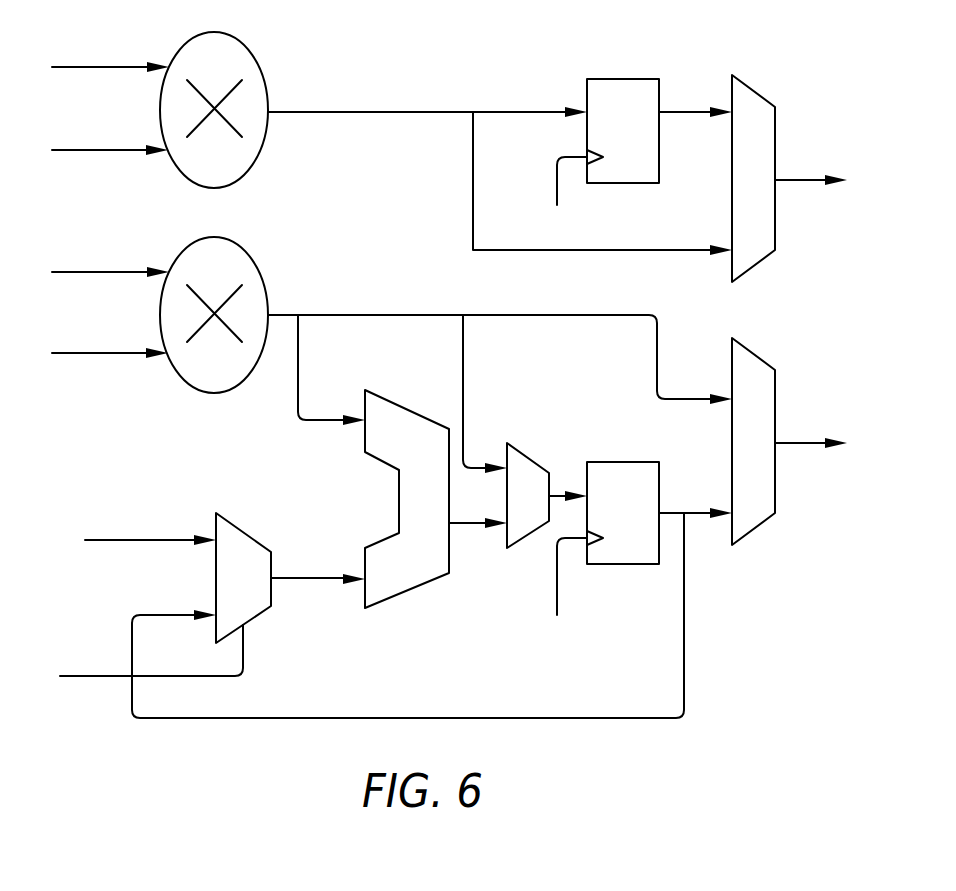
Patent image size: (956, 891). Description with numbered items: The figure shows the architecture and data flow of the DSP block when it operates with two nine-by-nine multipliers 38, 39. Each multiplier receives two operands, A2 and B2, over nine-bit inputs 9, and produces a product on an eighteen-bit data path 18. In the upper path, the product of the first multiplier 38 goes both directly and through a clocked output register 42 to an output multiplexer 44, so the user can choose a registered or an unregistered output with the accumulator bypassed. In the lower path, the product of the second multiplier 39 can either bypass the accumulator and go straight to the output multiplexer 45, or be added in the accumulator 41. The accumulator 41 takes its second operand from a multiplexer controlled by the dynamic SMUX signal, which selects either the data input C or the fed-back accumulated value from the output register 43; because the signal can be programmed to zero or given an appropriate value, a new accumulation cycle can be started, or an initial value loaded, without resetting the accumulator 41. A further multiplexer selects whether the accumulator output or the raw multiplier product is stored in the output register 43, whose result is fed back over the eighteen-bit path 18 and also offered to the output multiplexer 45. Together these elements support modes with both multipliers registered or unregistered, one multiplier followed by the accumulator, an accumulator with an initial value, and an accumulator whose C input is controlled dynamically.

The 9-bit input 9 is at (108, 402).
The 18-bit data path 18 is at (377, 127).
The 9×9 multiplier 38 is at (244, 38).
The 9×9 multiplier 39 is at (244, 243).
The accumulator 41 is at (425, 418).
The output register 42 is at (648, 79).
The output register 43 is at (645, 564).
The output multiplexer 44 is at (755, 90).
The output multiplexer 45 is at (755, 352).